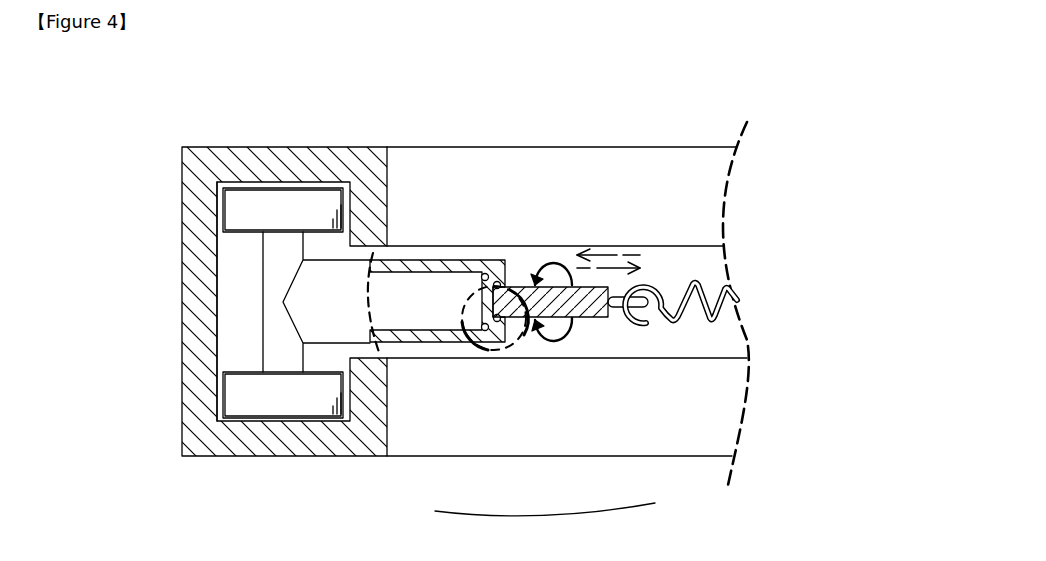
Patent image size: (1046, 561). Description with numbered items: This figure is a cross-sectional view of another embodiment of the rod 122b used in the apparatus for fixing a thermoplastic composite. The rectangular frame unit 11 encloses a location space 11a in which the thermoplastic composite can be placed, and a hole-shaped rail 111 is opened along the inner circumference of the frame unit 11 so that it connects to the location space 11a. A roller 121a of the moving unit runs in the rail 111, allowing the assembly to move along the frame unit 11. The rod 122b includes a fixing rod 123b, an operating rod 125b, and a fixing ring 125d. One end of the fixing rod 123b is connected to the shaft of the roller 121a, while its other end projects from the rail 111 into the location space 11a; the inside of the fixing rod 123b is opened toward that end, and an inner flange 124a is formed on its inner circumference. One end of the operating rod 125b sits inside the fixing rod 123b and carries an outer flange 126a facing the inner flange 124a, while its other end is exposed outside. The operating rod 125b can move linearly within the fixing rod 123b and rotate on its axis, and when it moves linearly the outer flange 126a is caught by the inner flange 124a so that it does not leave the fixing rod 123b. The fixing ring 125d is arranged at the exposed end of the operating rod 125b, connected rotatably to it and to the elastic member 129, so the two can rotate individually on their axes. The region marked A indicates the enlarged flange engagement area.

The frame unit 11 is at (243, 155).
The location space 11a is at (600, 168).
The rail 111 is at (226, 310).
The roller 121a is at (306, 189).
The rod 122b is at (545, 523).
The fixing rod 123b is at (472, 348).
The inner flange 124a is at (510, 287).
The operating rod 125b is at (548, 338).
The fixing ring 125d is at (621, 306).
The outer flange 126a is at (481, 279).
The elastic member 129 is at (698, 277).
The region A is at (413, 350).